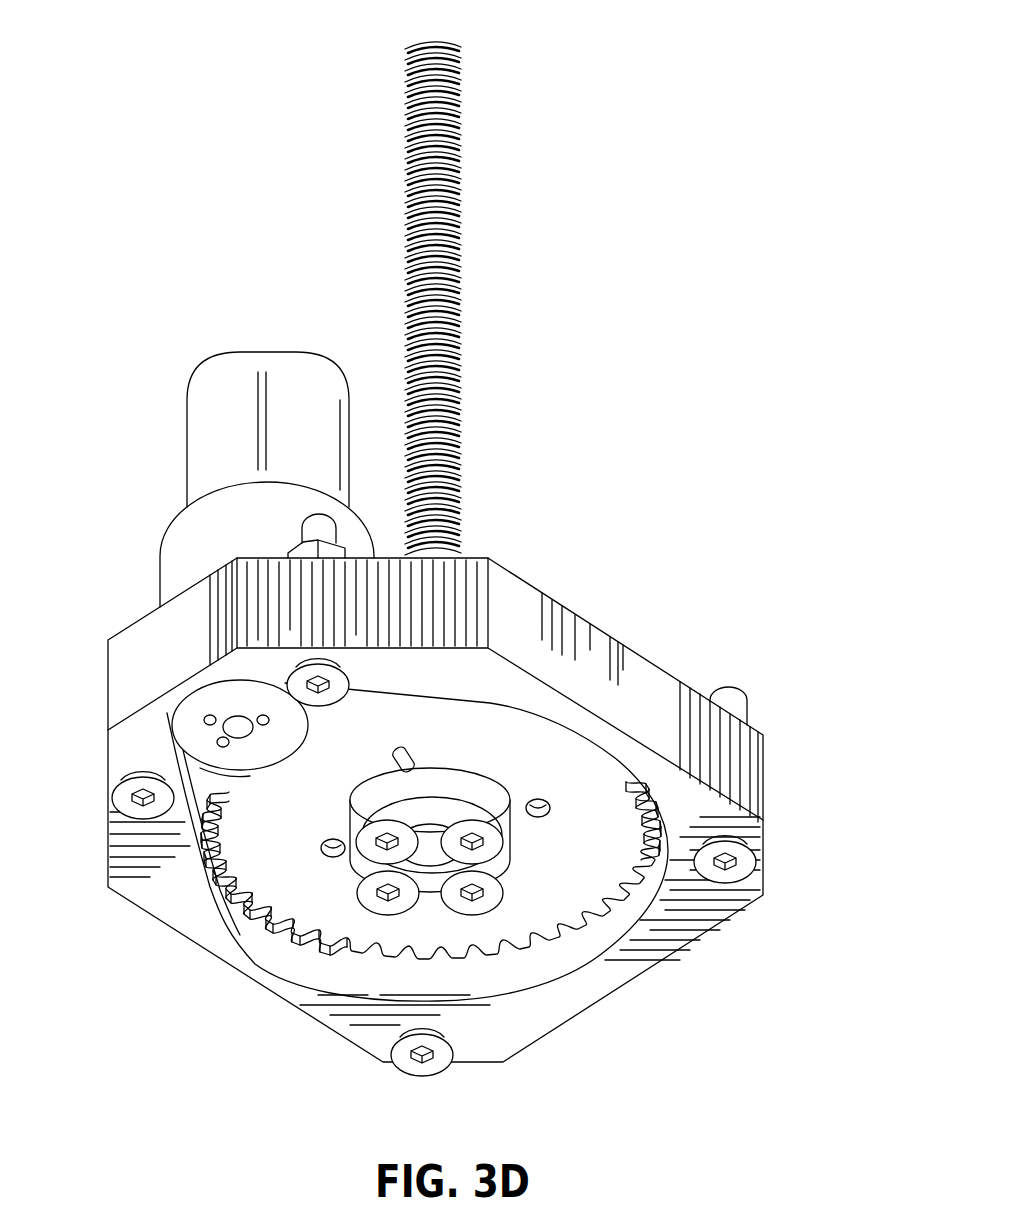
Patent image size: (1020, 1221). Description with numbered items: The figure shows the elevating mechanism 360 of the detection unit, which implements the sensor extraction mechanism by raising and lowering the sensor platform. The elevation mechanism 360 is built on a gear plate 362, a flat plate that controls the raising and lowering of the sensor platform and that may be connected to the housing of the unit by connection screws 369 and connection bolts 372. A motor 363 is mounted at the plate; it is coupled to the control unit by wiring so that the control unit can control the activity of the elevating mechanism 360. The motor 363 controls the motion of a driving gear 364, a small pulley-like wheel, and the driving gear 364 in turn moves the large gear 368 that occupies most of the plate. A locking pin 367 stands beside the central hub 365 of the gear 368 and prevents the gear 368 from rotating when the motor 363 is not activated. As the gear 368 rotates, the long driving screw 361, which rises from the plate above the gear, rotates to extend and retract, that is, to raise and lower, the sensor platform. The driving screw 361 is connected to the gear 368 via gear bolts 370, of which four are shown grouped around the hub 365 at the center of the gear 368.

The elevating mechanism 360 is at (611, 315).
The driving screw 361 is at (460, 497).
The gear plate 362 is at (590, 652).
The motor 363 is at (172, 560).
The driving gear 364 is at (222, 702).
The hub 365 is at (376, 794).
The locking pin 367 is at (401, 752).
The gear 368 is at (238, 882).
The connection screws 369 is at (428, 1068).
The gear bolts 370 is at (366, 893).
The connection bolts 372 is at (308, 530).